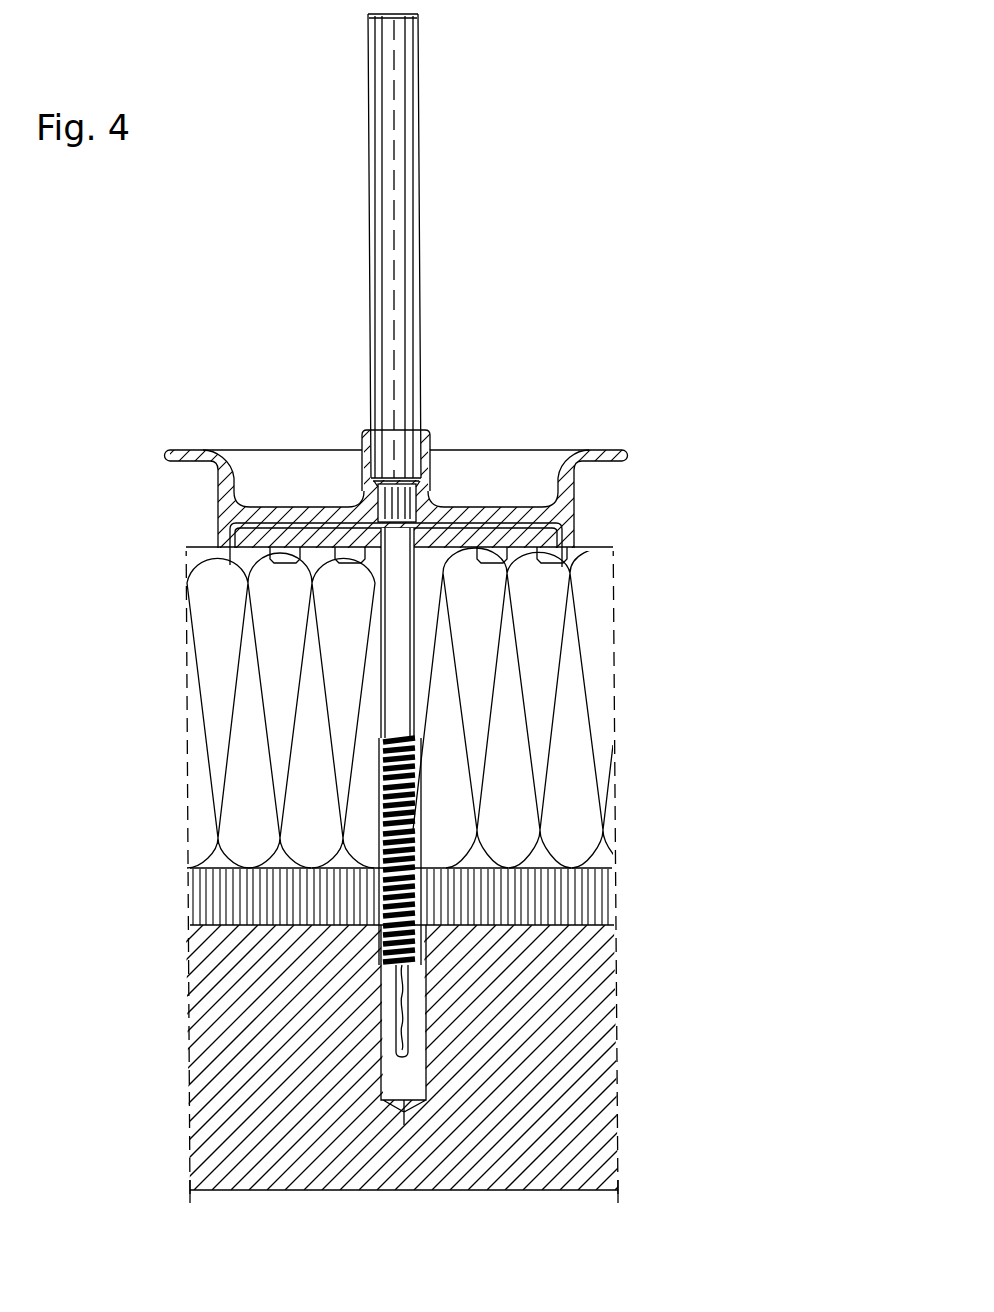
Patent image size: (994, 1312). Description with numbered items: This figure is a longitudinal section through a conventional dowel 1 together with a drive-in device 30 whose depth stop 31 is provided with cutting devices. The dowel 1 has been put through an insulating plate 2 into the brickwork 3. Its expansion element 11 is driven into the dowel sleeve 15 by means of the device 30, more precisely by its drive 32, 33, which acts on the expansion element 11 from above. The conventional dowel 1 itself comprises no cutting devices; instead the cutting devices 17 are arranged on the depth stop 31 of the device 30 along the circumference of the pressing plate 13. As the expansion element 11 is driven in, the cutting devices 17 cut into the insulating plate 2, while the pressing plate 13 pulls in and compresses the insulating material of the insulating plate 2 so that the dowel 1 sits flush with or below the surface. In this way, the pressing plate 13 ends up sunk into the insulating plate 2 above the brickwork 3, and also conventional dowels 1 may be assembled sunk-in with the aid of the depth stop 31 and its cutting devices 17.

The dowel 1 is at (372, 604).
The insulating plate 2 is at (578, 815).
The brickwork 3 is at (548, 1025).
The expansion element 11 is at (390, 690).
The pressing plate 13 is at (305, 547).
The dowel sleeve 15 is at (388, 803).
The cutting devices 17 is at (480, 553).
The device 30 is at (436, 282).
The depth stop 31 is at (572, 478).
The drive 32 is at (455, 553).
The drive 33 is at (420, 513).